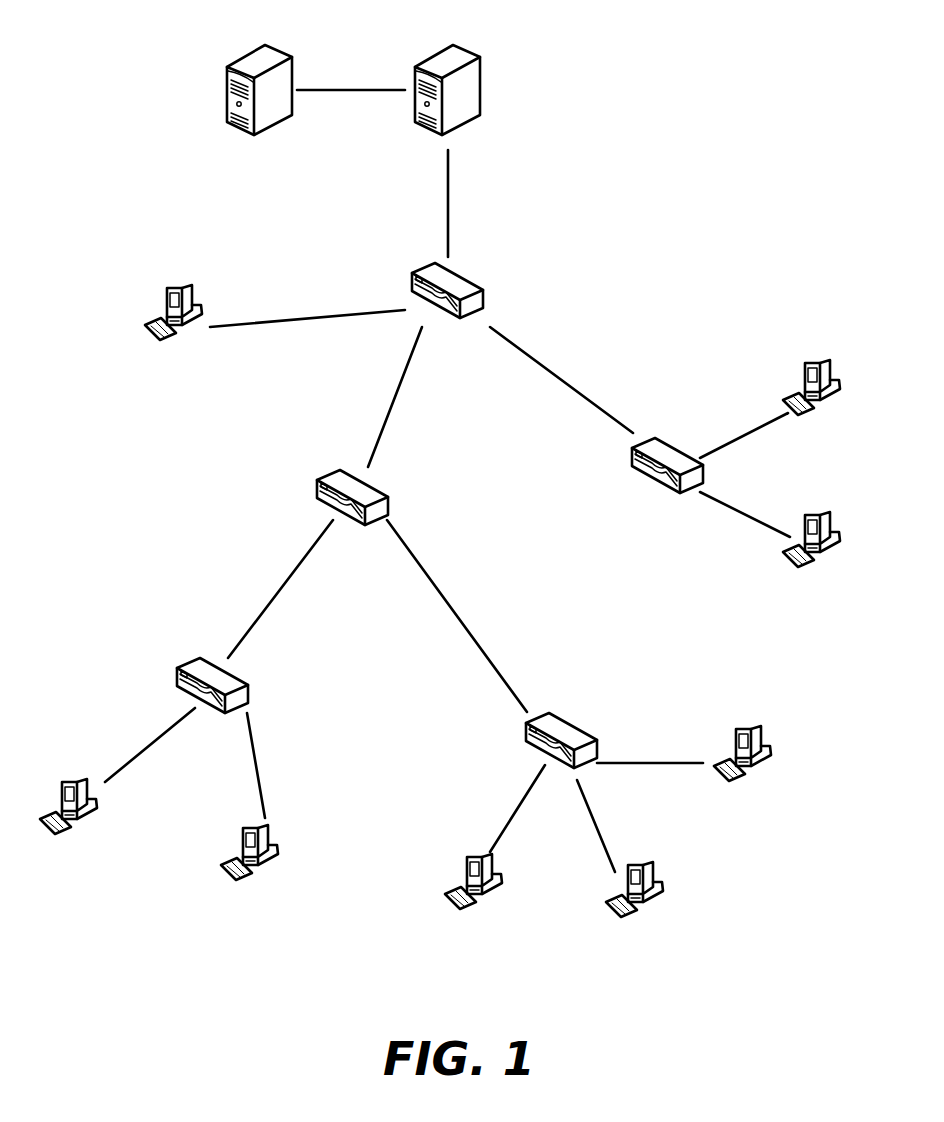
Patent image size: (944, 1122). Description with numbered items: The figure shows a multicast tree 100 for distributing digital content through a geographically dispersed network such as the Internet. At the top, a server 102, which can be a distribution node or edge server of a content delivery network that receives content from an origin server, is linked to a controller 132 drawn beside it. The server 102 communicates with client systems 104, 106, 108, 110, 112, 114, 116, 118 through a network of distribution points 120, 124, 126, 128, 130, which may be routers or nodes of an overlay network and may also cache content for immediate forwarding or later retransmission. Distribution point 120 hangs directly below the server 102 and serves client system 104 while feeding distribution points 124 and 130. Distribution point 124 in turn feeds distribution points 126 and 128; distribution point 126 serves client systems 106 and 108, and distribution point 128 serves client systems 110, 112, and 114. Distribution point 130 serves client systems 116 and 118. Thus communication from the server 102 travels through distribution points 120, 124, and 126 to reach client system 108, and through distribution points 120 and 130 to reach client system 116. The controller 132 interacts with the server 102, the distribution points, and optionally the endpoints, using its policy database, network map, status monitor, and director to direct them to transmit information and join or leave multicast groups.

The multicast tree 100 is at (702, 153).
The server 102 is at (473, 58).
The client system 104 is at (188, 292).
The client system 106 is at (68, 782).
The client system 108 is at (263, 833).
The client system 110 is at (495, 862).
The client system 112 is at (653, 867).
The client system 114 is at (757, 727).
The client system 116 is at (817, 517).
The client system 118 is at (810, 362).
The distribution point 120 is at (473, 280).
The distribution point 124 is at (370, 482).
The distribution point 126 is at (242, 677).
The distribution point 128 is at (573, 723).
The distribution point 130 is at (667, 442).
The controller 132 is at (288, 52).